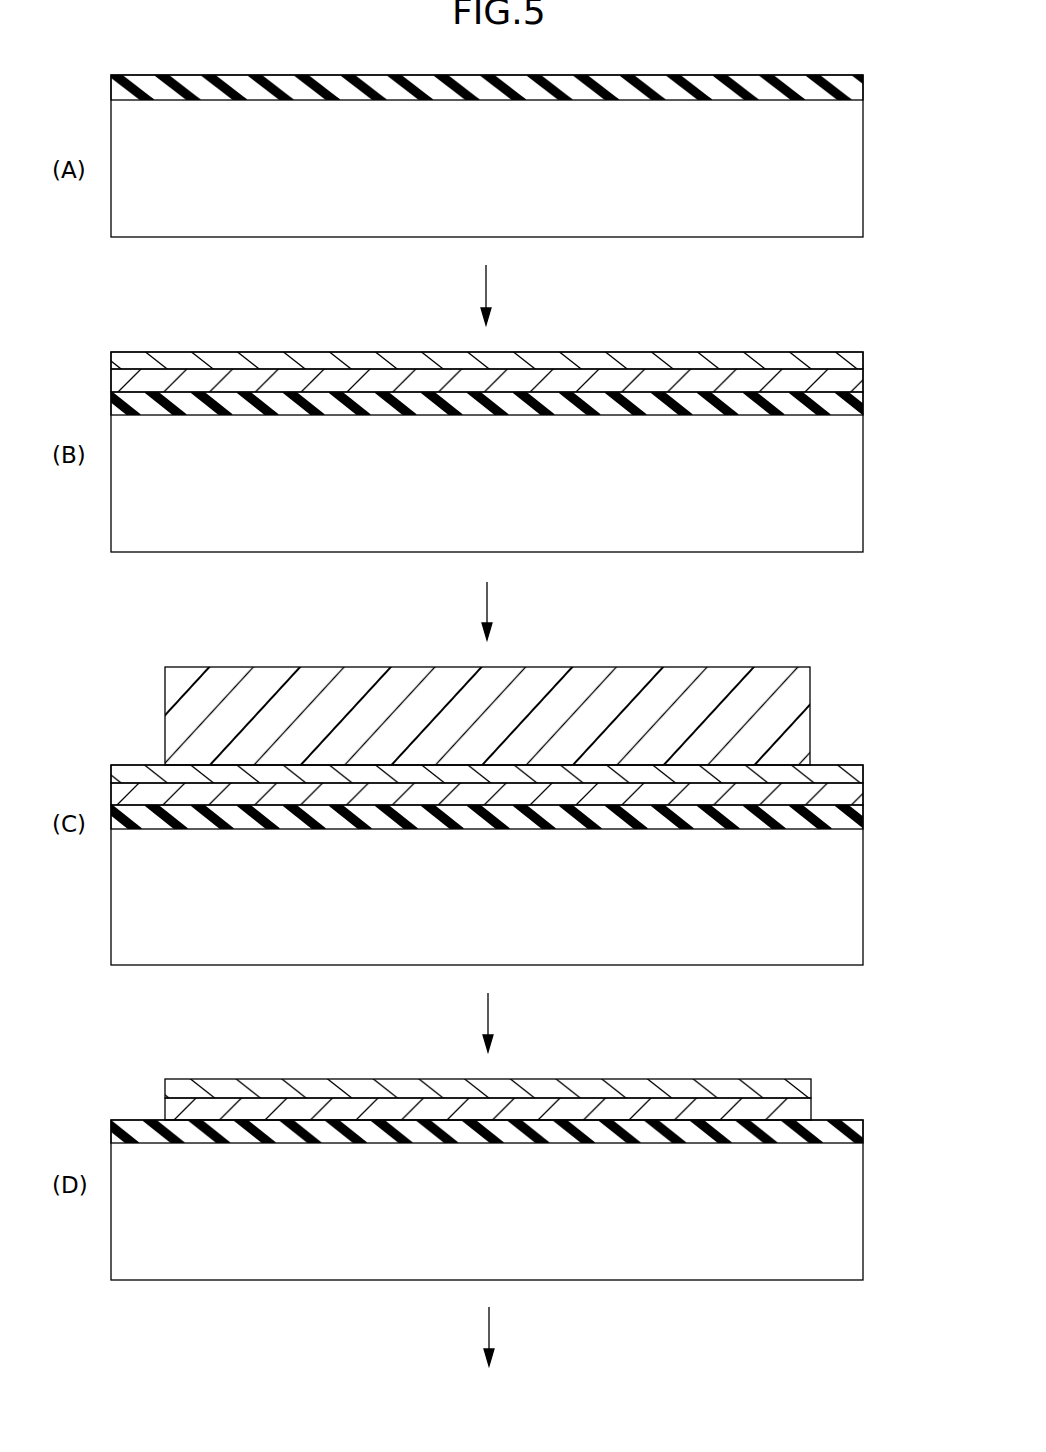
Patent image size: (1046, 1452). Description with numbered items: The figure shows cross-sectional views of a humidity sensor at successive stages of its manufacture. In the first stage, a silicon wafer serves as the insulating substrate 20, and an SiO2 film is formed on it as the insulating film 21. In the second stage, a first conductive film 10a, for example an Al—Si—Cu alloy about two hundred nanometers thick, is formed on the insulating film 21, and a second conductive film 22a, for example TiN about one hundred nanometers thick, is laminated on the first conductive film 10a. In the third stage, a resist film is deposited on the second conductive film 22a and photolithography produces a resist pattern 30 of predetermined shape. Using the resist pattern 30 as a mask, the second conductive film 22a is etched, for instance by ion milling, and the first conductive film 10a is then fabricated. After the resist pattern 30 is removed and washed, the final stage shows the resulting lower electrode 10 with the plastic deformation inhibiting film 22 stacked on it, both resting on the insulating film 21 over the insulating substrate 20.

The lower electrode 10 is at (800, 1110).
The first conductive film 10a is at (847, 383).
The insulating substrate 20 is at (848, 170).
The insulating film 21 is at (848, 87).
The plastic deformation inhibiting film 22 is at (800, 1088).
The second conductive film 22a is at (847, 363).
The resist pattern 30 is at (795, 712).